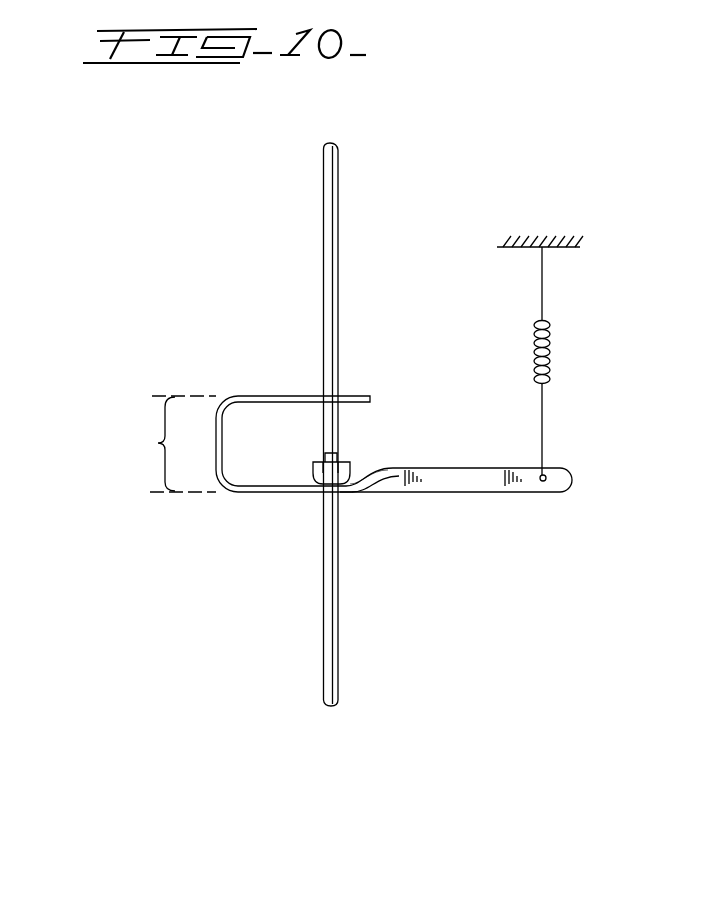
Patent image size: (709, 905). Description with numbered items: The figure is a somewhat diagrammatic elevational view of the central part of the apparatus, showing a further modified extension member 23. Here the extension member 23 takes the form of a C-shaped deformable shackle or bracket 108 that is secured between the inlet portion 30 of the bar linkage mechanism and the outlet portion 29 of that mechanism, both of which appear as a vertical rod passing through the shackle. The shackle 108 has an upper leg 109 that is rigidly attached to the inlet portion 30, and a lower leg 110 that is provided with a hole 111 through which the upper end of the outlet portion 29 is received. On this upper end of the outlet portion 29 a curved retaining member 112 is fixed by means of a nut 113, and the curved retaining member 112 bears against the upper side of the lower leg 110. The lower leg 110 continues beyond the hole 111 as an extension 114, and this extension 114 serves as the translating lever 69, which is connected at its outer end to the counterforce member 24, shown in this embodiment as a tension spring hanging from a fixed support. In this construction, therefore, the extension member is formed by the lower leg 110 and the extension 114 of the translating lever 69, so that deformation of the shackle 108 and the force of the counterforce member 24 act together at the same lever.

The extension member 23 is at (163, 444).
The counterforce member 24 is at (550, 357).
The outlet portion 29 is at (338, 616).
The inlet portion 30 is at (337, 266).
The translating lever 69 is at (523, 491).
The C-shaped deformable shackle 108 is at (333, 439).
The upper leg 109 is at (353, 396).
The lower leg 110 is at (287, 495).
The hole 111 is at (342, 494).
The curved retaining member 112 is at (356, 478).
The nut 113 is at (348, 465).
The extension 114 is at (478, 482).